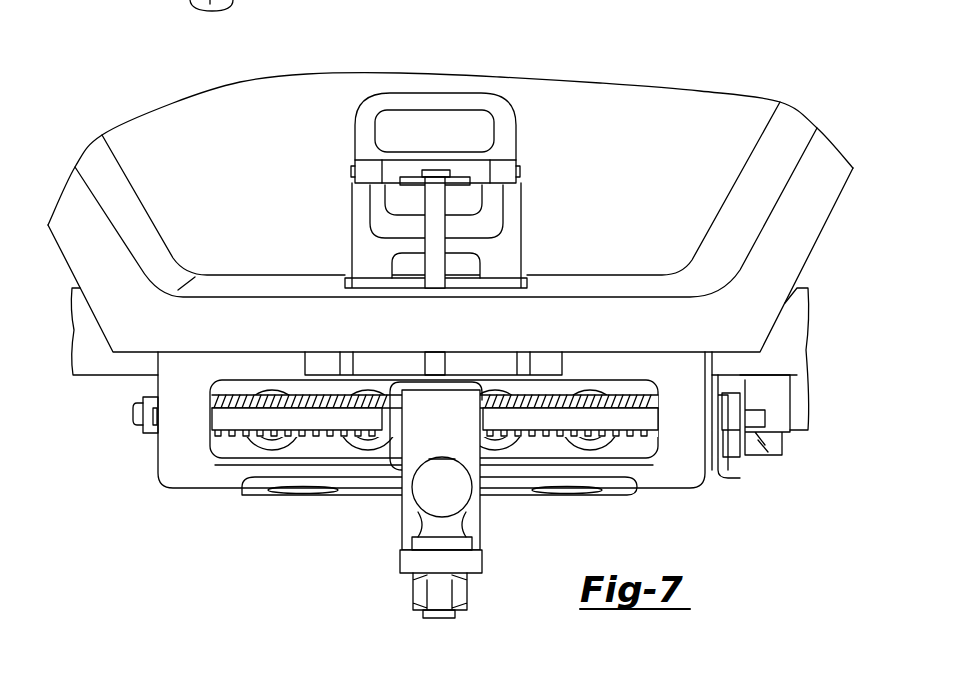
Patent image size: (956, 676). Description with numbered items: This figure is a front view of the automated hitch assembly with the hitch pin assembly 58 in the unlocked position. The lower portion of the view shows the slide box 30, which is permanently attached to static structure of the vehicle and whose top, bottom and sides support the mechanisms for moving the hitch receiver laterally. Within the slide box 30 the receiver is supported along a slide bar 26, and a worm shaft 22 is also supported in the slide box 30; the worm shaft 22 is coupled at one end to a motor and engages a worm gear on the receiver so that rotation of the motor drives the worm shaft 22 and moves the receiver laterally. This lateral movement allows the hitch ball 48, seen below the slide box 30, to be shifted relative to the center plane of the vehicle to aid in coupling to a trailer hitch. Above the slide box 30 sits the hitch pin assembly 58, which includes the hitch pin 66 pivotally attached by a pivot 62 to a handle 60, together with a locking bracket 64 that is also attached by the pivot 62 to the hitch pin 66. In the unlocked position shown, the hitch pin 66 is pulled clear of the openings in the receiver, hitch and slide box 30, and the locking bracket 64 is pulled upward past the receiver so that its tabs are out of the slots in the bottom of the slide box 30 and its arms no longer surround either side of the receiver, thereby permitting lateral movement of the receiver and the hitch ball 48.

The hitch pin assembly 58 is at (466, 80).
The handle 60 is at (505, 118).
The pivot 62 is at (533, 167).
The locking bracket 64 is at (506, 249).
The hitch pin 66 is at (433, 245).
The worm shaft 22 is at (243, 397).
The slide box 30 is at (175, 455).
The hitch ball 48 is at (430, 495).
The slide bar 26 is at (548, 422).